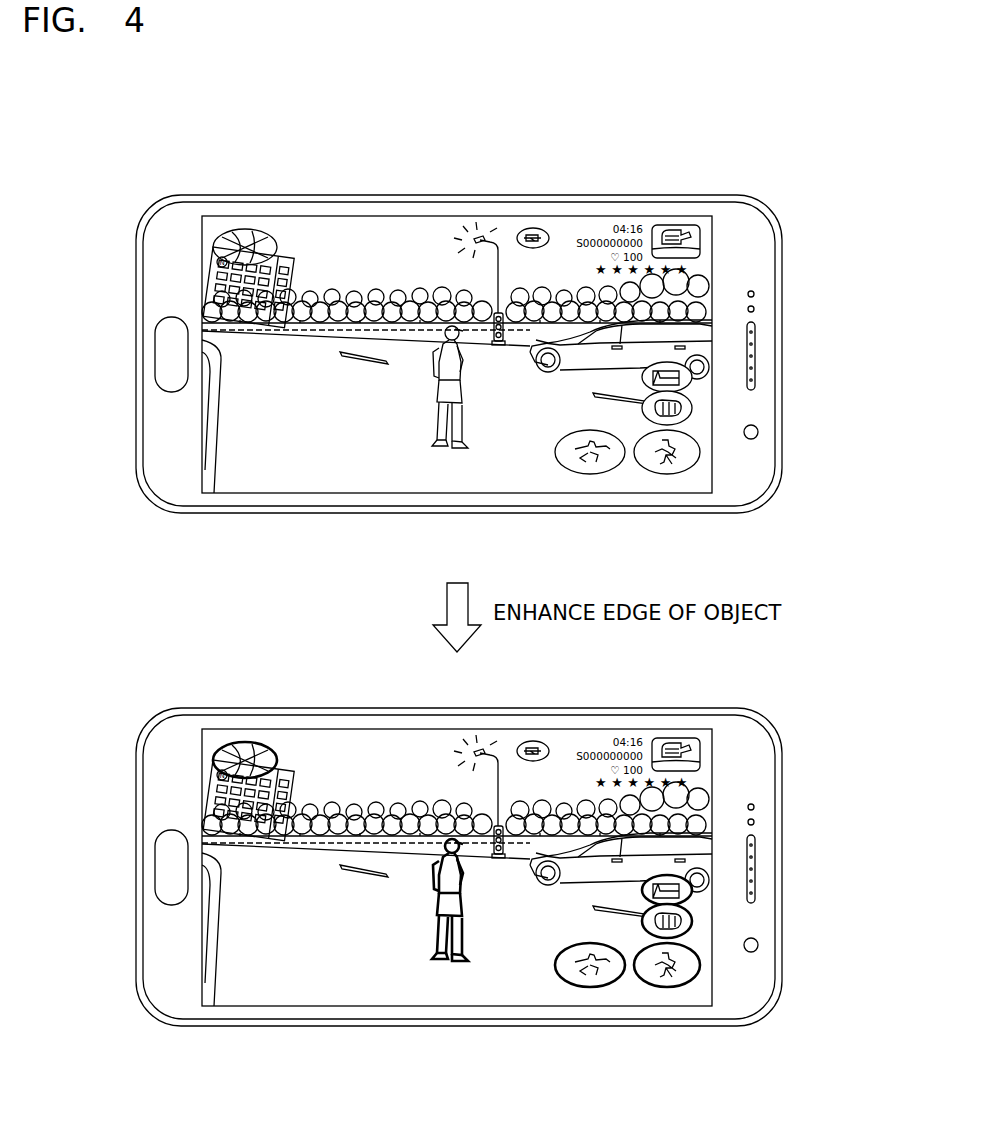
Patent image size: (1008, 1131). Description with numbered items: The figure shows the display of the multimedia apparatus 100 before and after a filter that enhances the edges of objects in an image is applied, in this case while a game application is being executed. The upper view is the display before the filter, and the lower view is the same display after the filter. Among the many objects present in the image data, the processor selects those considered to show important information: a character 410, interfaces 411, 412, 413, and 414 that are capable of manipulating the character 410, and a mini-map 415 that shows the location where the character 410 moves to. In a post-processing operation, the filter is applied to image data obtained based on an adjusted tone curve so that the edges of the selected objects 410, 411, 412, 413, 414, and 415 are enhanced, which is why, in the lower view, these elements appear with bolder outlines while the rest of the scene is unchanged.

The multimedia apparatus 100 is at (668, 195).
The character 410 is at (444, 447).
The interface 411 is at (590, 474).
The interface 412 is at (667, 474).
The interface 413 is at (692, 408).
The interface 414 is at (692, 377).
The mini-map 415 is at (245, 229).